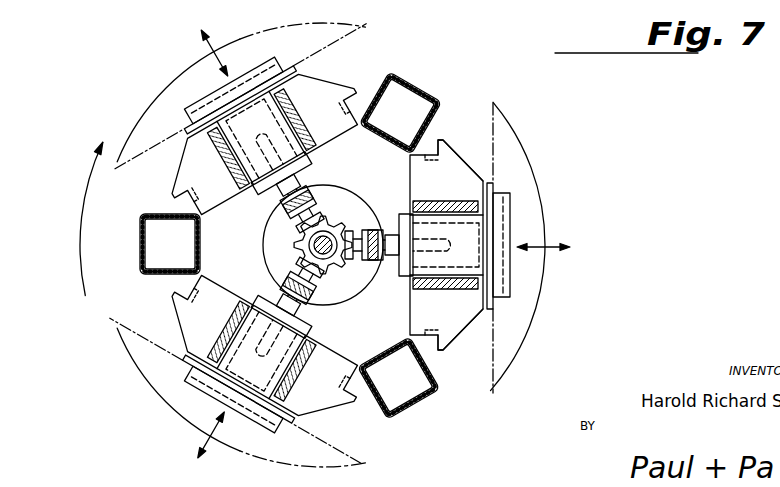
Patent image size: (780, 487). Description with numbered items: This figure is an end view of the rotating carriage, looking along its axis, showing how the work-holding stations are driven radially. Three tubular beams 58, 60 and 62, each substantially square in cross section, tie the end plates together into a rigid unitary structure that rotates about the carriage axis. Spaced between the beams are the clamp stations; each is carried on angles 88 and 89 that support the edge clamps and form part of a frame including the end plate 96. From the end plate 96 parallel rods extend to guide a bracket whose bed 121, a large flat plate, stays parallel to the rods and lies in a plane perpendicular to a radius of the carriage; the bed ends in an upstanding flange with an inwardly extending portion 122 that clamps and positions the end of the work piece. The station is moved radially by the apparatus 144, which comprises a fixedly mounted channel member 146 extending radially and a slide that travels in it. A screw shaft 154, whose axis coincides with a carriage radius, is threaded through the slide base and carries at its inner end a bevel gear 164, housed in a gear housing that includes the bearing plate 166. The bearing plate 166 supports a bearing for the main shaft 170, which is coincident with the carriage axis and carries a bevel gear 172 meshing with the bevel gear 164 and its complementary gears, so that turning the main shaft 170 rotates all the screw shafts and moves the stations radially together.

The tubular beam 58 is at (425, 95).
The tubular beam 60 is at (423, 405).
The tubular beam 62 is at (140, 268).
The angle 88 is at (460, 144).
The angle 89 is at (460, 347).
The end plate 96 is at (468, 245).
The bed 121 is at (528, 239).
The inwardly extending portion 122 is at (539, 251).
The apparatus 144 is at (536, 248).
The channel member 146 is at (451, 215).
The screw shaft 154 is at (379, 263).
The bevel gear 164 is at (337, 268).
The bearing plate 166 is at (357, 218).
The main shaft 170 is at (318, 246).
The bevel gear 172 is at (312, 234).